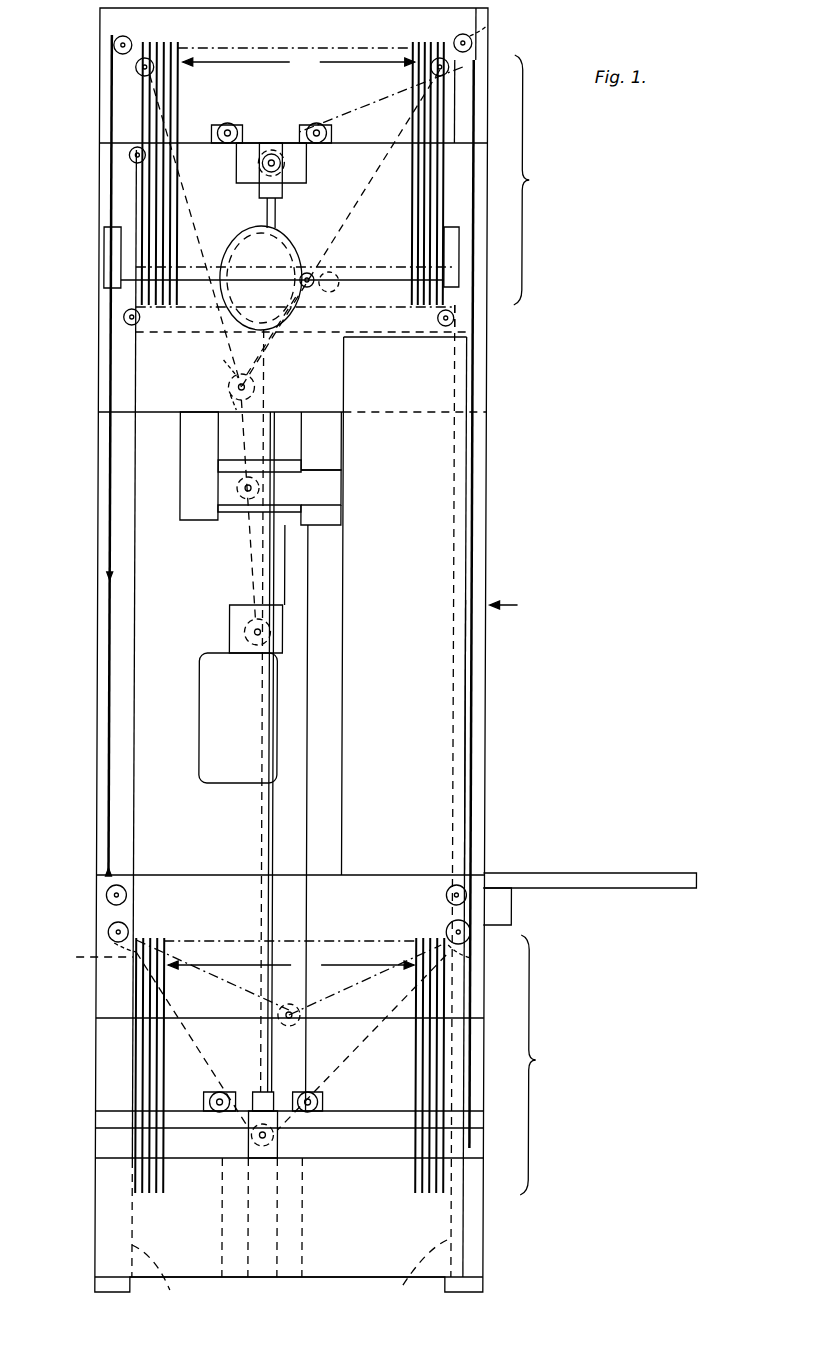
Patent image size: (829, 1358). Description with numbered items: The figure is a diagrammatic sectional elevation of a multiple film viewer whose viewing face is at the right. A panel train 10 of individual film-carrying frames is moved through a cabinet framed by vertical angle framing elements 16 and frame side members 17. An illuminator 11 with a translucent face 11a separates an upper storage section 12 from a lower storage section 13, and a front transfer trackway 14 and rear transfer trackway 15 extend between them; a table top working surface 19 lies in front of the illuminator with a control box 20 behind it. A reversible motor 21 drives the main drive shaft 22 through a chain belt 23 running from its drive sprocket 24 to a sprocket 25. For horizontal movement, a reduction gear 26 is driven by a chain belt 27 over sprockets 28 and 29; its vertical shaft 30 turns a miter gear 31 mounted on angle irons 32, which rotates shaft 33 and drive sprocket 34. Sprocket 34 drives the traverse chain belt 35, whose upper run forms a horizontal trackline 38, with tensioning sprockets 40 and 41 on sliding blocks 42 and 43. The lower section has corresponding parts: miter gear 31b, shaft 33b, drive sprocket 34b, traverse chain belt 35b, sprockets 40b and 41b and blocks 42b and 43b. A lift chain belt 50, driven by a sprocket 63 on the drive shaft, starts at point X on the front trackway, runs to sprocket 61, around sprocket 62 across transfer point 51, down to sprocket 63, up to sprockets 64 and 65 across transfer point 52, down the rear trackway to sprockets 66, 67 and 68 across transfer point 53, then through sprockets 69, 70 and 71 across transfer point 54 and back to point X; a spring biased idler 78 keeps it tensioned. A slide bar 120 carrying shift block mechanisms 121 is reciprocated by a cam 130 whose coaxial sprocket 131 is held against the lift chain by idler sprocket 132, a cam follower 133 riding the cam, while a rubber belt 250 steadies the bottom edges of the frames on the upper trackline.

The panel train 10 is at (293, 514).
The illuminator 11 is at (416, 545).
The translucent face 11a is at (476, 680).
The upper storage section 12 is at (534, 180).
The lower storage section 13 is at (540, 1065).
The front panel transfer trackway 14 is at (478, 522).
The rear panel transfer trackway 15 is at (108, 512).
The vertical angle framing elements 16 is at (289, 1272).
The frame side members 17 is at (120, 152).
The table top working surface 19 is at (605, 872).
The control box 20 is at (508, 872).
The reversible motor 21 is at (208, 718).
The main drive shaft 22 is at (230, 385).
The chain belt 23 is at (240, 580).
The drive sprocket 24 is at (235, 620).
The sprocket 25 is at (225, 360).
The reduction gear 26 is at (320, 483).
The chain belt 27 is at (230, 435).
The sprocket 28 is at (267, 333).
The sprocket 29 is at (245, 500).
The shaft 30 is at (300, 445).
The miter gear 31 is at (284, 190).
The angle irons 32 is at (237, 158).
The shaft 33 is at (286, 168).
The drive sprocket 34 is at (273, 150).
The traverse chain belt 35 is at (408, 100).
The horizontal trackline 38 is at (305, 46).
The sprocket 40 is at (213, 130).
The sprocket 41 is at (333, 130).
The block 42 is at (236, 124).
The block 43 is at (318, 124).
The lift chain belt 50 is at (372, 202).
The transfer point 51 is at (455, 36).
The transfer point 52 is at (146, 56).
The transfer point 53 is at (140, 935).
The transfer point 54 is at (458, 955).
The sprocket 61 is at (488, 25).
The sprocket 62 is at (430, 70).
The sprocket 63 is at (232, 395).
The sprocket 64 is at (175, 50).
The sprocket 65 is at (112, 35).
The sprocket 66 is at (108, 888).
The sprocket 67 is at (112, 925).
The sprocket 68 is at (118, 950).
The sprocket 69 is at (448, 935).
The sprocket 70 is at (475, 958).
The sprocket 71 is at (450, 888).
The spring biased idler 78 is at (300, 1005).
The slide bar 120 is at (345, 284).
The shift block mechanism 121 is at (105, 243).
The cam 130 is at (258, 230).
The sprocket 131 is at (295, 238).
The idler sprocket 132 is at (335, 275).
The cam follower 133 is at (312, 270).
The rubber belt 250 is at (301, 320).
The miter gear 31b is at (280, 1092).
The shaft 33b is at (282, 1138).
The drive sprocket 34b is at (253, 1125).
The traverse chain belt 35b is at (330, 935).
The sprocket 40b is at (218, 1092).
The sprocket 41b is at (322, 1092).
The block 42b is at (215, 1098).
The block 43b is at (325, 1104).
The starting point X is at (513, 605).